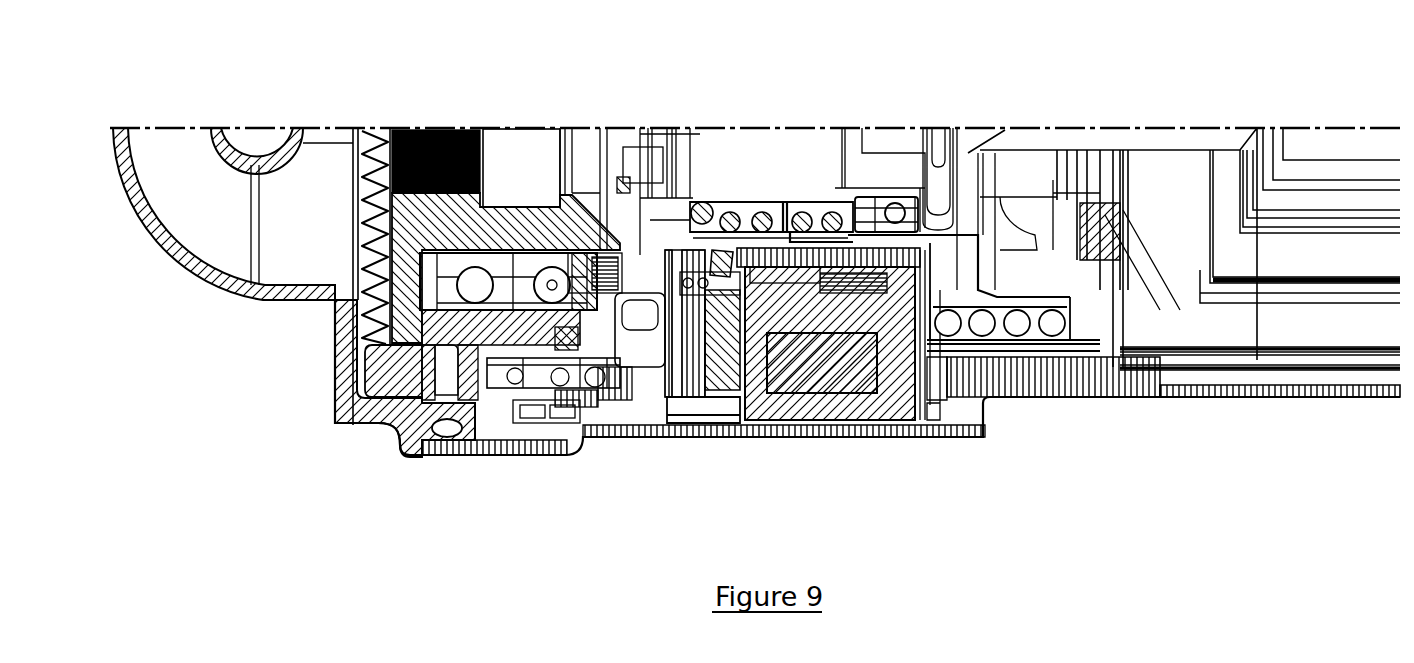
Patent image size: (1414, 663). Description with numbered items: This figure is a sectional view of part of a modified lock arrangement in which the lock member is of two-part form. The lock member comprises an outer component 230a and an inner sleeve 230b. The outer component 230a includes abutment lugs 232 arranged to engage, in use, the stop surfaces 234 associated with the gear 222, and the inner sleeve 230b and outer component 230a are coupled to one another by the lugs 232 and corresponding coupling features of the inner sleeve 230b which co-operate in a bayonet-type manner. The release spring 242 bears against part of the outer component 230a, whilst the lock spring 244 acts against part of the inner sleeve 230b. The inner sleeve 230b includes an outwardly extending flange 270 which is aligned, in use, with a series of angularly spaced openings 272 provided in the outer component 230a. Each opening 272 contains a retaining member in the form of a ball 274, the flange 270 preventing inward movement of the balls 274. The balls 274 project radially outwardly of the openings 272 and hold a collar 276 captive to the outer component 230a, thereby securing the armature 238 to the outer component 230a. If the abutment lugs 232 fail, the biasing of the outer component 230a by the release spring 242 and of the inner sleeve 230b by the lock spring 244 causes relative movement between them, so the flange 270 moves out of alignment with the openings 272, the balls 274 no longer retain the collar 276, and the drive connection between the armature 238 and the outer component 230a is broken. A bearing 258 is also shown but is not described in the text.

The gear 222 is at (383, 130).
The abutment lugs 232 is at (647, 255).
The stop surfaces 234 is at (645, 252).
The armature 238 is at (760, 290).
The release spring 242 is at (527, 403).
The lock spring 244 is at (803, 213).
The roller bearing 258 is at (990, 292).
The flange 270 is at (731, 214).
The openings 272 is at (722, 340).
The balls 274 is at (722, 255).
The collar 276 is at (690, 400).
The outer component 230a is at (635, 400).
The inner sleeve 230b is at (758, 248).